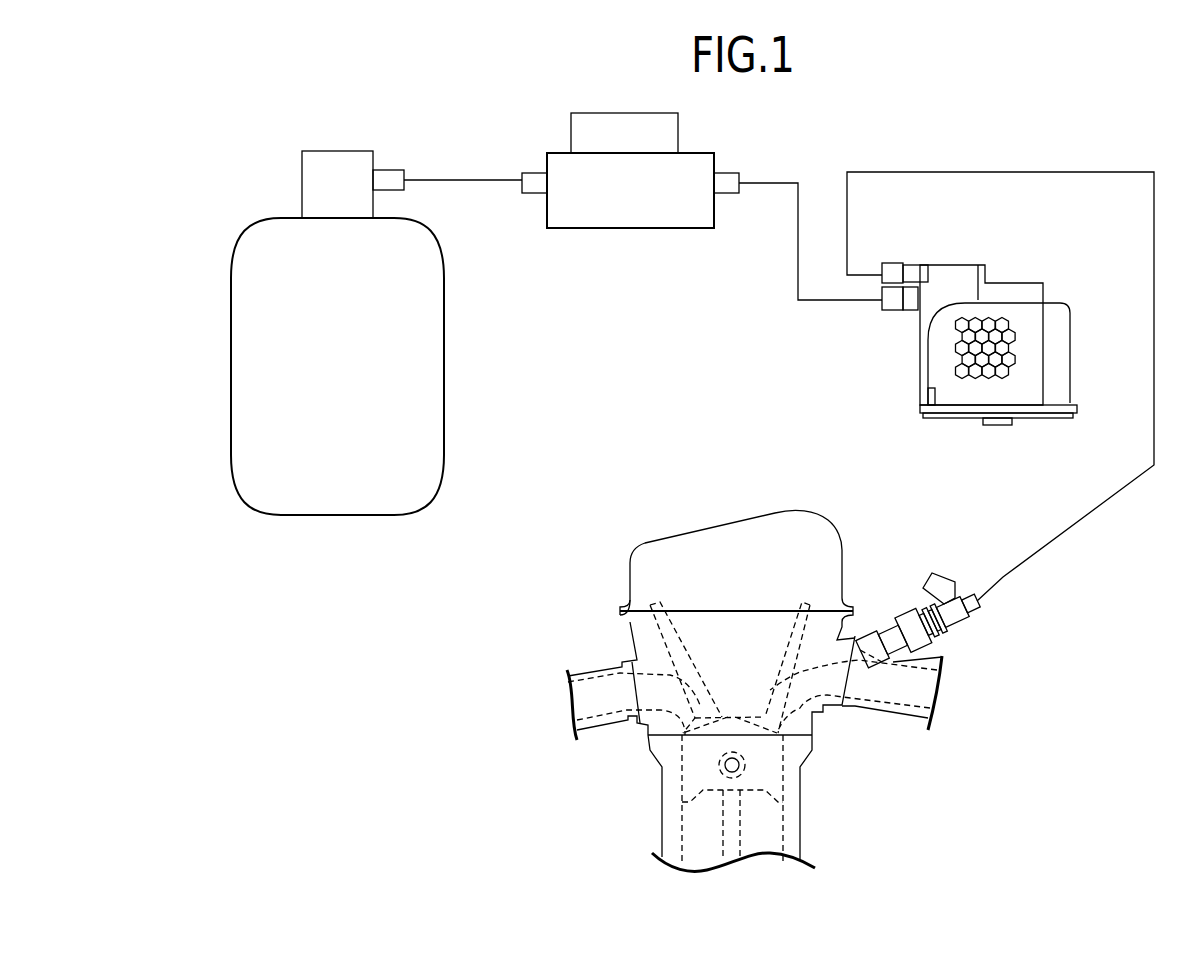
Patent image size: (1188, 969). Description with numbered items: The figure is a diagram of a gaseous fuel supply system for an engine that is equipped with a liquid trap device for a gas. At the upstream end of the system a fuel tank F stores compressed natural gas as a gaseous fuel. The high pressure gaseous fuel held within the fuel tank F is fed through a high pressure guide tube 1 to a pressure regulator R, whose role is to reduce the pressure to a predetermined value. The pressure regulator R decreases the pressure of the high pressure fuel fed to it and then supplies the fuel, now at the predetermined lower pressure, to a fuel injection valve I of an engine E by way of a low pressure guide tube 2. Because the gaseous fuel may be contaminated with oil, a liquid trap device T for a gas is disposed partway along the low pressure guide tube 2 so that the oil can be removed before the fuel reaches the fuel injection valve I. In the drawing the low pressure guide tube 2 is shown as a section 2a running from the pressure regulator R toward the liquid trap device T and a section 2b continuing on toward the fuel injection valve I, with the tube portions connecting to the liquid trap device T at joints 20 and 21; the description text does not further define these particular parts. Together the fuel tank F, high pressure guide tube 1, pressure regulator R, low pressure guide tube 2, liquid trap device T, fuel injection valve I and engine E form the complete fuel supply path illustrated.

The high pressure guide tube 1 is at (440, 178).
The low pressure guide tube 2 is at (946, 358).
The upstream pipe portion 2a is at (777, 180).
The downstream pipe portion 2b is at (960, 173).
The pipe joint (lower) 20 is at (895, 305).
The pipe joint (upper) 21 is at (893, 270).
The fuel tank F is at (332, 352).
The pressure regulator R is at (623, 203).
The liquid trap device for a gas T is at (1010, 275).
The engine E is at (658, 525).
The fuel injection valve I is at (894, 640).